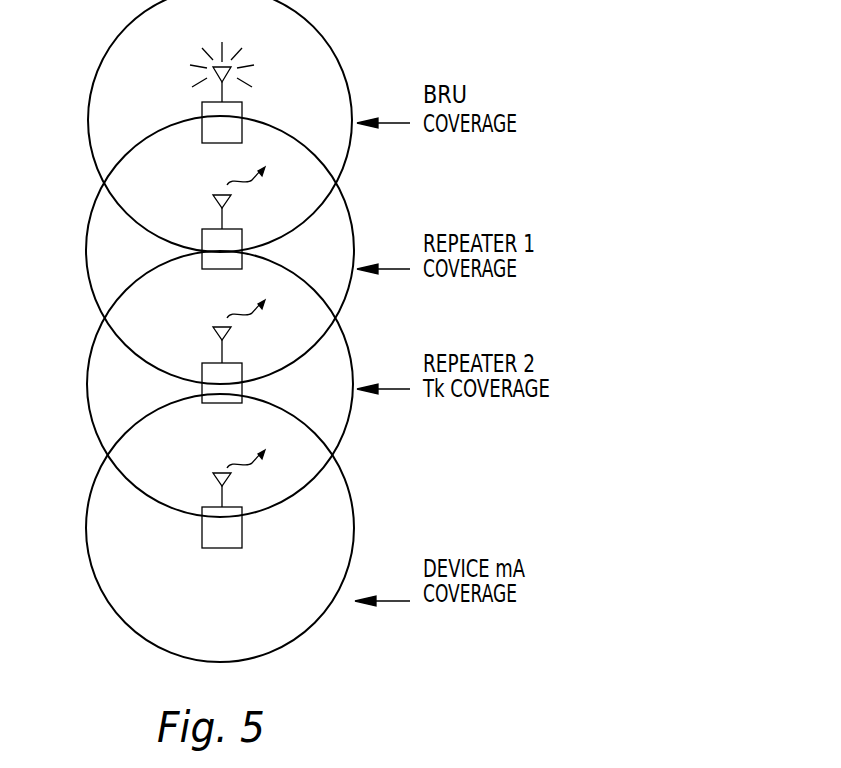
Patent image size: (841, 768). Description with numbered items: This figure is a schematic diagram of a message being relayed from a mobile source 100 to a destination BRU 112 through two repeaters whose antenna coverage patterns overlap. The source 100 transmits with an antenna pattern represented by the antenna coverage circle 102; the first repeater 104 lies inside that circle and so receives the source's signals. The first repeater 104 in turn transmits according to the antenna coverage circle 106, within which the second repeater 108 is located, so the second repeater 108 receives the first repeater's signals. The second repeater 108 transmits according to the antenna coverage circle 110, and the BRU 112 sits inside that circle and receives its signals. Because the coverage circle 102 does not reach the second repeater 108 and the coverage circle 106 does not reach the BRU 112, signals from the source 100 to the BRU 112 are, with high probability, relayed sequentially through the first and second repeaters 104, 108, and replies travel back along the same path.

The mobile source 100 is at (222, 548).
The antenna coverage circle 102 is at (90, 560).
The first repeater 104 is at (205, 360).
The antenna coverage circle 106 is at (99, 440).
The second repeater 108 is at (202, 240).
The antenna coverage circle 110 is at (98, 300).
The BRU 112 is at (243, 127).